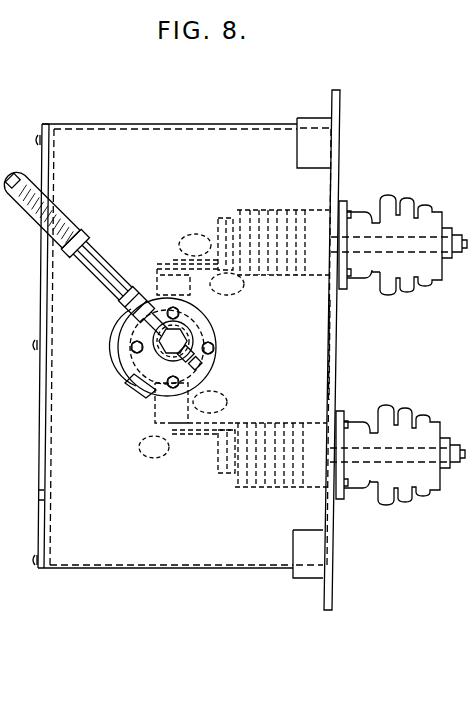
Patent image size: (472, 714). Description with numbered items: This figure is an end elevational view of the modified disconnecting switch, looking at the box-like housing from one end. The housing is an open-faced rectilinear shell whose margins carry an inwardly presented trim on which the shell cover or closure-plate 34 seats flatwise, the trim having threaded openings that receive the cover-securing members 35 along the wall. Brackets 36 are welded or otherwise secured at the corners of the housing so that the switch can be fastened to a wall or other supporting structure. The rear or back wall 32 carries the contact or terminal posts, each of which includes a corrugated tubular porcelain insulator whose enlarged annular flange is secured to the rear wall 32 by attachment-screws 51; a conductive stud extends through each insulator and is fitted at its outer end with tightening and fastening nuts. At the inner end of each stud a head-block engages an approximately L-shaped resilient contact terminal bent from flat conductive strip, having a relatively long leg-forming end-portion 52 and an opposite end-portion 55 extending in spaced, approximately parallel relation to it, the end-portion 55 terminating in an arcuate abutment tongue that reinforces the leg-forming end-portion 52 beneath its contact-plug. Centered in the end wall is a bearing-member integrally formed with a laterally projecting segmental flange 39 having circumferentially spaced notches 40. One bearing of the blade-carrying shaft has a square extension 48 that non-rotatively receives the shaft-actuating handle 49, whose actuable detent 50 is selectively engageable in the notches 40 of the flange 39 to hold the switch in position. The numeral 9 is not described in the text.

The cover-securing member 35 is at (38, 140).
The closure-plate 34 is at (40, 497).
The adjacent element 9 is at (4, 261).
The bracket 36 is at (340, 94).
The rear wall 32 is at (336, 351).
The attachment-screw 51 is at (350, 213).
The end-portion 55 is at (169, 447).
The leg-forming end-portion 52 is at (199, 347).
The segmental flange 39 is at (119, 364).
The notch 40 is at (130, 390).
The extension 48 is at (190, 343).
The detent 50 is at (121, 311).
The handle 49 is at (104, 262).